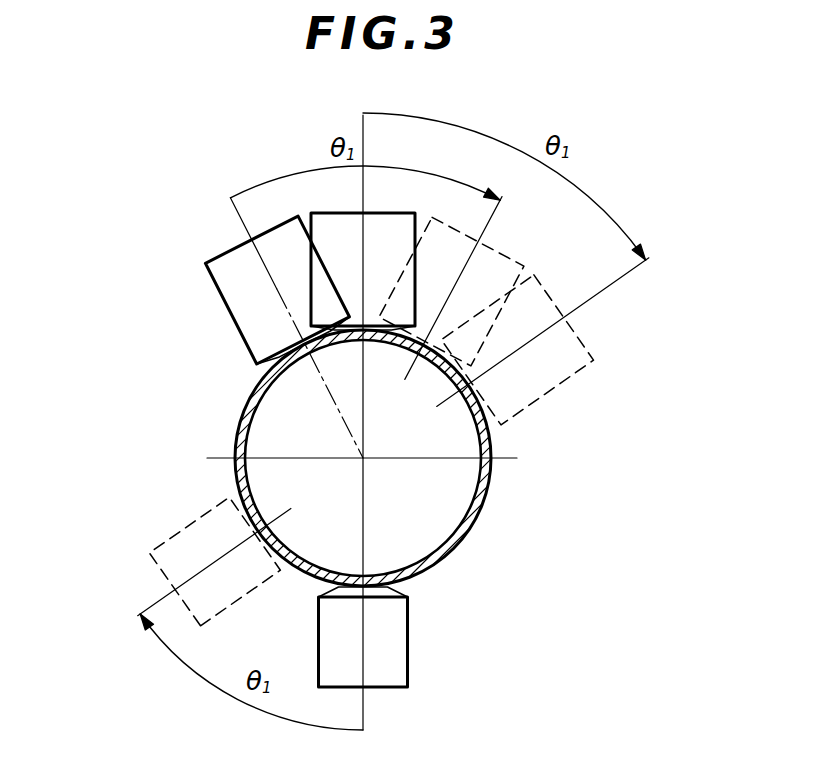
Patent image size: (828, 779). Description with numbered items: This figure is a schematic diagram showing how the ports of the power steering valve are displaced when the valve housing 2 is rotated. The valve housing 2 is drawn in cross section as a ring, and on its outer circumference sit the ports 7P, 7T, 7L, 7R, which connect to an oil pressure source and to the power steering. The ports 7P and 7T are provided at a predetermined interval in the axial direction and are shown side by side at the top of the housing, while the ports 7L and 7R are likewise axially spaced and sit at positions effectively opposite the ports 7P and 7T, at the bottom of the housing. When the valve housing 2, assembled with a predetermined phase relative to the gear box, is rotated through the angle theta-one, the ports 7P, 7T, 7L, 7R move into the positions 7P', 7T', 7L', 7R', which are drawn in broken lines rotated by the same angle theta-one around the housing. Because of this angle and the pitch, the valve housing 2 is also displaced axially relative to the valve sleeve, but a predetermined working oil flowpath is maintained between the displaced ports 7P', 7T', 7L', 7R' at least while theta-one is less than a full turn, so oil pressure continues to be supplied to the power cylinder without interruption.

The valve housing 2 is at (455, 545).
The port 7T is at (373, 254).
The port 7P is at (253, 276).
The rotated position of port 7P' is at (484, 288).
The rotated position of port 7T' is at (564, 350).
The port 7L is at (435, 638).
The port 7R is at (435, 638).
The rotated position of port 7L' is at (170, 555).
The rotated position of port 7R' is at (170, 555).